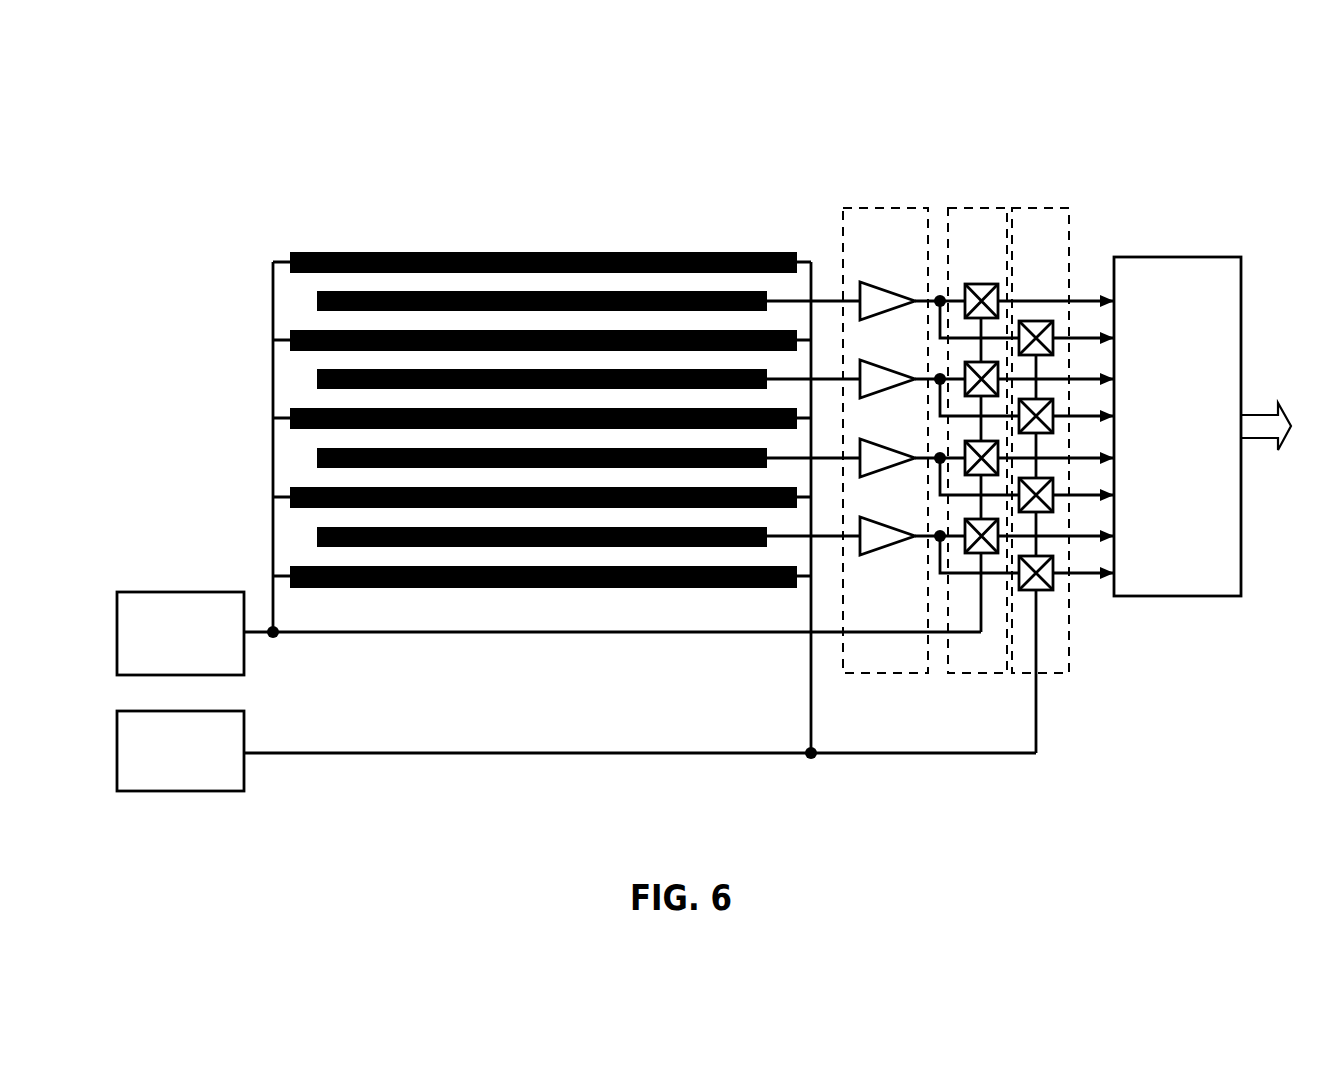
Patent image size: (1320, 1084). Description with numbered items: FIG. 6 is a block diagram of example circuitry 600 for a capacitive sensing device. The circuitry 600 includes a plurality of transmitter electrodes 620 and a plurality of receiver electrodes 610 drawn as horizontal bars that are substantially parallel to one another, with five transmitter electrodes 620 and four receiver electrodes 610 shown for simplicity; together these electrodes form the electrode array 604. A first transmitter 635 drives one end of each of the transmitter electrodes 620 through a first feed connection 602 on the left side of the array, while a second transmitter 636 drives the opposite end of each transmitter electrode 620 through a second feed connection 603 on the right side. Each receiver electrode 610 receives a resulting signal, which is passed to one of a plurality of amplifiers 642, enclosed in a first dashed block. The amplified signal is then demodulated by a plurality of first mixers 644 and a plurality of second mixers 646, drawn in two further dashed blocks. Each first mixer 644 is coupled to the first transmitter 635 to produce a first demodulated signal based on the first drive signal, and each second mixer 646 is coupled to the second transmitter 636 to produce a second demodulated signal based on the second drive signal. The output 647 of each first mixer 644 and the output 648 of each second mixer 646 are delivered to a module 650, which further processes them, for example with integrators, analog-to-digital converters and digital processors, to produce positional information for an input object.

The circuitry 600 is at (207, 101).
The first feed network 602 is at (271, 233).
The second feed network 603 is at (815, 234).
The antenna array 604 is at (478, 131).
The receiver electrode 610 is at (317, 310).
The transmitter electrode 620 is at (512, 250).
The first transmitter 635 is at (549, 633).
The second transmitter 636 is at (576, 751).
The amplifier 642 is at (875, 208).
The first mixer 644 is at (980, 208).
The second mixer 646 is at (1035, 208).
The first mixer output 647 is at (1090, 540).
The second mixer output 648 is at (1077, 575).
The module 650 is at (1202, 426).